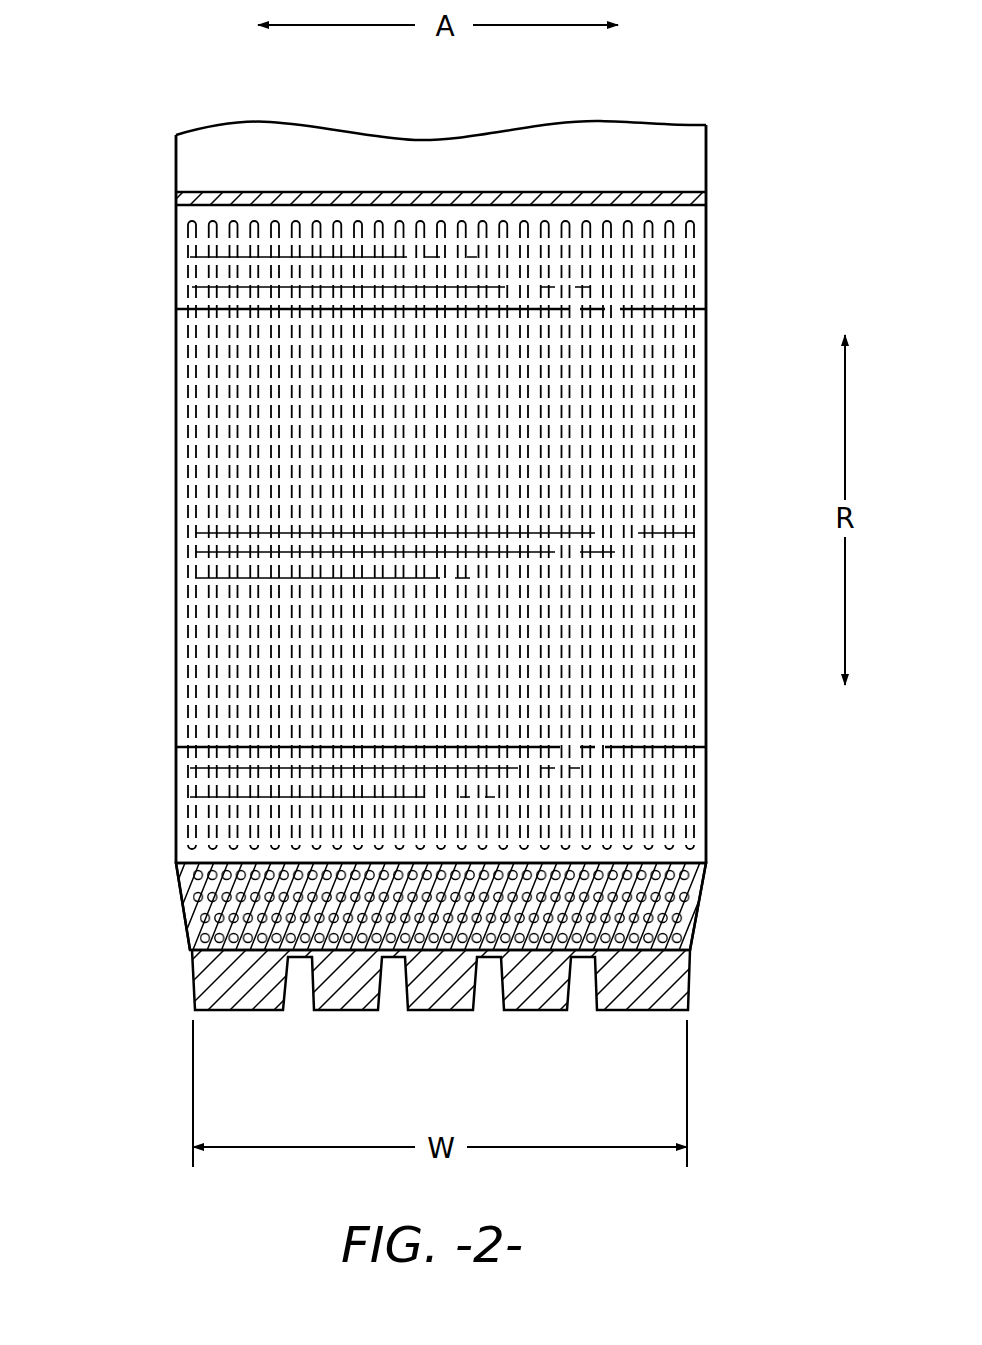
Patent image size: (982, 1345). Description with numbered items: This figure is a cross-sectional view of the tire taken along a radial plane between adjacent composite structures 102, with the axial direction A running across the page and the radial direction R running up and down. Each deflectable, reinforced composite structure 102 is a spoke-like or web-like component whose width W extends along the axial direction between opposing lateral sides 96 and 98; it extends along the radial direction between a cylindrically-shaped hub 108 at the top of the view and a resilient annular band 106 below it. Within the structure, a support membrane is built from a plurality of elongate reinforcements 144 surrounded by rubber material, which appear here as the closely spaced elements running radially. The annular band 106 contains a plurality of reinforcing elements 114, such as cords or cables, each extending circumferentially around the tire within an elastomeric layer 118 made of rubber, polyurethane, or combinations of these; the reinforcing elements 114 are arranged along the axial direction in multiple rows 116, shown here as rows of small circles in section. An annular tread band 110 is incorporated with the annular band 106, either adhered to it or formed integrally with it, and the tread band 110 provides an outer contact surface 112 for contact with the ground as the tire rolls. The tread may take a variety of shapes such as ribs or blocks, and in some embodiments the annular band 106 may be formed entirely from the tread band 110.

The lateral side 96 is at (150, 397).
The lateral side 98 is at (730, 397).
The composite structure 102 is at (176, 473).
The annular band 106 is at (708, 945).
The hub 108 is at (706, 198).
The tread band 110 is at (713, 992).
The outer contact surface 112 is at (245, 1015).
The reinforcing elements 114 is at (695, 875).
The rows 116 is at (703, 898).
The elastomeric layer 118 is at (690, 928).
The reinforcements 144 is at (185, 355).